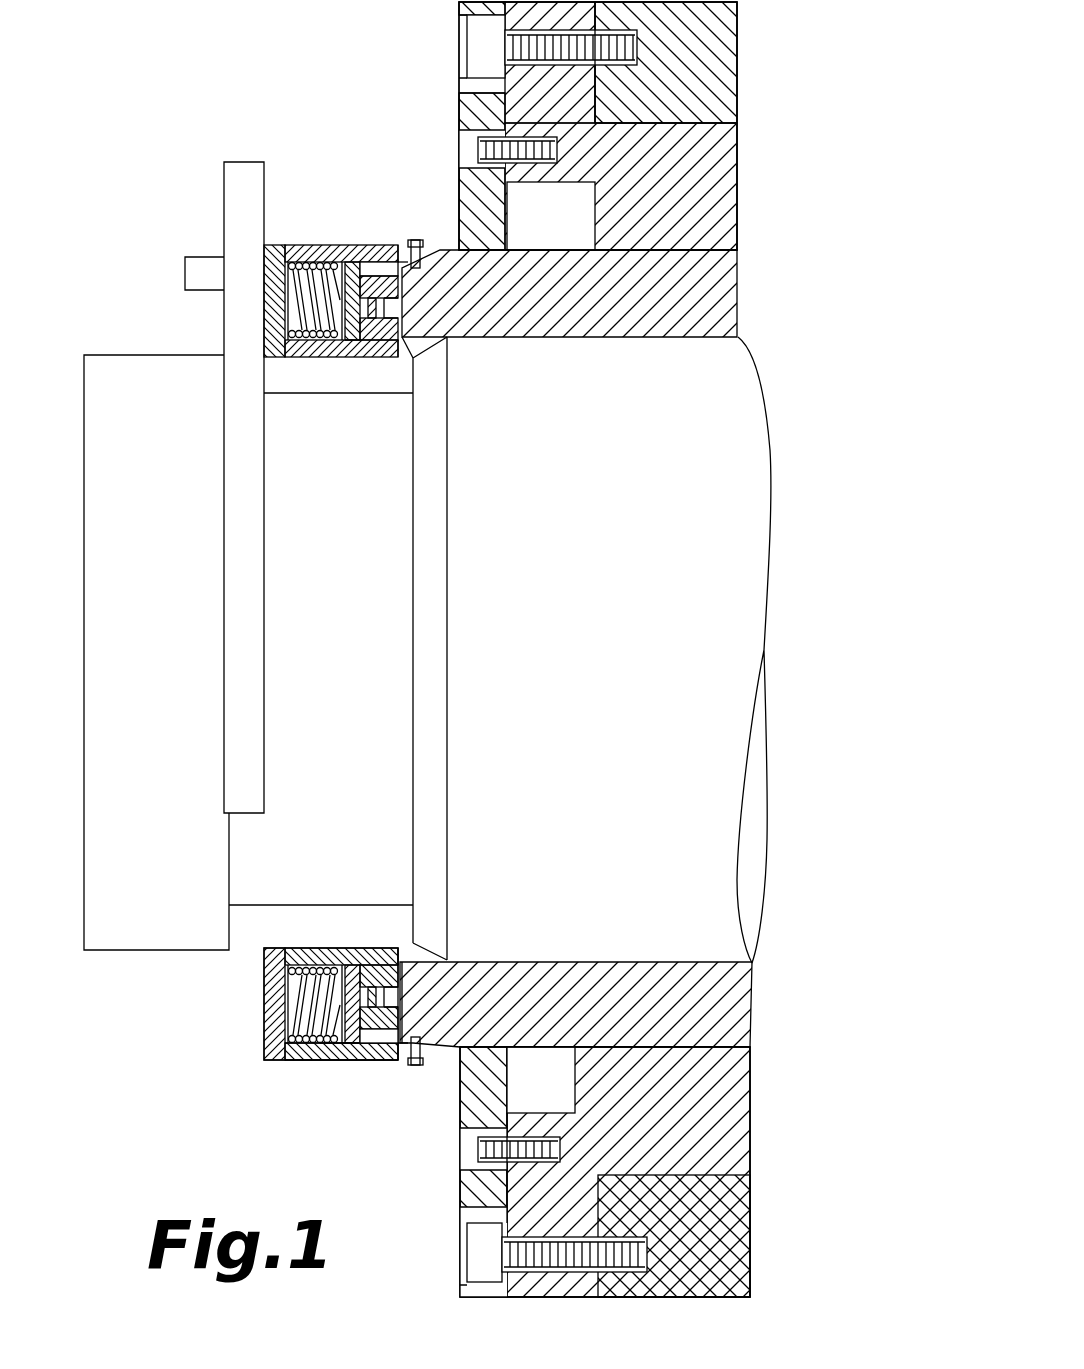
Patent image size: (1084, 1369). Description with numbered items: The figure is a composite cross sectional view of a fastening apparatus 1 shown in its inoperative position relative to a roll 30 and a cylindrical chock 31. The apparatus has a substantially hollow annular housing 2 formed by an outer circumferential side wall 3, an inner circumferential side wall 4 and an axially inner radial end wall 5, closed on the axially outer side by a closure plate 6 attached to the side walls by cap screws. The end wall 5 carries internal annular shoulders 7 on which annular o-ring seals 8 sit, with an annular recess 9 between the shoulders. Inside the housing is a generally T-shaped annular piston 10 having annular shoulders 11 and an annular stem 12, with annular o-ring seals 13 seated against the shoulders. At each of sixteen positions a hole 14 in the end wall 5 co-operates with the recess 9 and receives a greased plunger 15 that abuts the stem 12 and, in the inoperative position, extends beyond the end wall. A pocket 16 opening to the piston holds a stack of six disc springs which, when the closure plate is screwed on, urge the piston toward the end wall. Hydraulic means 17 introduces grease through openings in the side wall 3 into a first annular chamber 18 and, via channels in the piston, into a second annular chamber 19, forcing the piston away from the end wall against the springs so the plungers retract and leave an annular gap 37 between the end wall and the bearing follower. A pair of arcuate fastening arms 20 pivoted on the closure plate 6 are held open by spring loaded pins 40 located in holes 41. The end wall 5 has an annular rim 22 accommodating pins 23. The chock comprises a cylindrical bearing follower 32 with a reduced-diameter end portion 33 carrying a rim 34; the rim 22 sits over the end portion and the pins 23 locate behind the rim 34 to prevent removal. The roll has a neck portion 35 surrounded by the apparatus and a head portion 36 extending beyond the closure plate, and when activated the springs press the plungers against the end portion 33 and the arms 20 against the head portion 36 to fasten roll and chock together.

The fastening apparatus 1 is at (247, 1050).
The annular housing 2 is at (290, 1070).
The outer circumferential side wall 3 is at (337, 1057).
The inner circumferential side wall 4 is at (300, 955).
The axially inner radial end wall 5 is at (383, 1047).
The closure plate 6 is at (266, 971).
The internal annular shoulders 7 is at (372, 1035).
The annular o-ring seals 8 is at (390, 356).
The annular recess 9 is at (372, 1007).
The annular piston 10 is at (343, 255).
The annular shoulders 11 is at (352, 352).
The annular stem 12 is at (303, 354).
The annular o-ring seals 13 is at (366, 262).
The hole 14 is at (410, 345).
The plunger 15 is at (400, 303).
The pocket 16 is at (302, 262).
The hydraulic means 17 is at (374, 255).
The first annular chamber 18 is at (378, 258).
The second annular chamber 19 is at (375, 352).
The fastening arms 20 is at (235, 185).
The annular rim 22 is at (427, 1048).
The pins 23 is at (417, 1067).
The roll 30 is at (582, 642).
The cylindrical chock 31 is at (705, 92).
The cylindrical bearing follower 32 is at (705, 303).
The end portion 33 is at (430, 296).
The rim 34 is at (408, 240).
The neck portion 35 is at (312, 643).
The head portion 36 is at (132, 643).
The annular gap 37 is at (438, 967).
The spring loaded pins 40 is at (192, 268).
The holes 41 is at (268, 276).